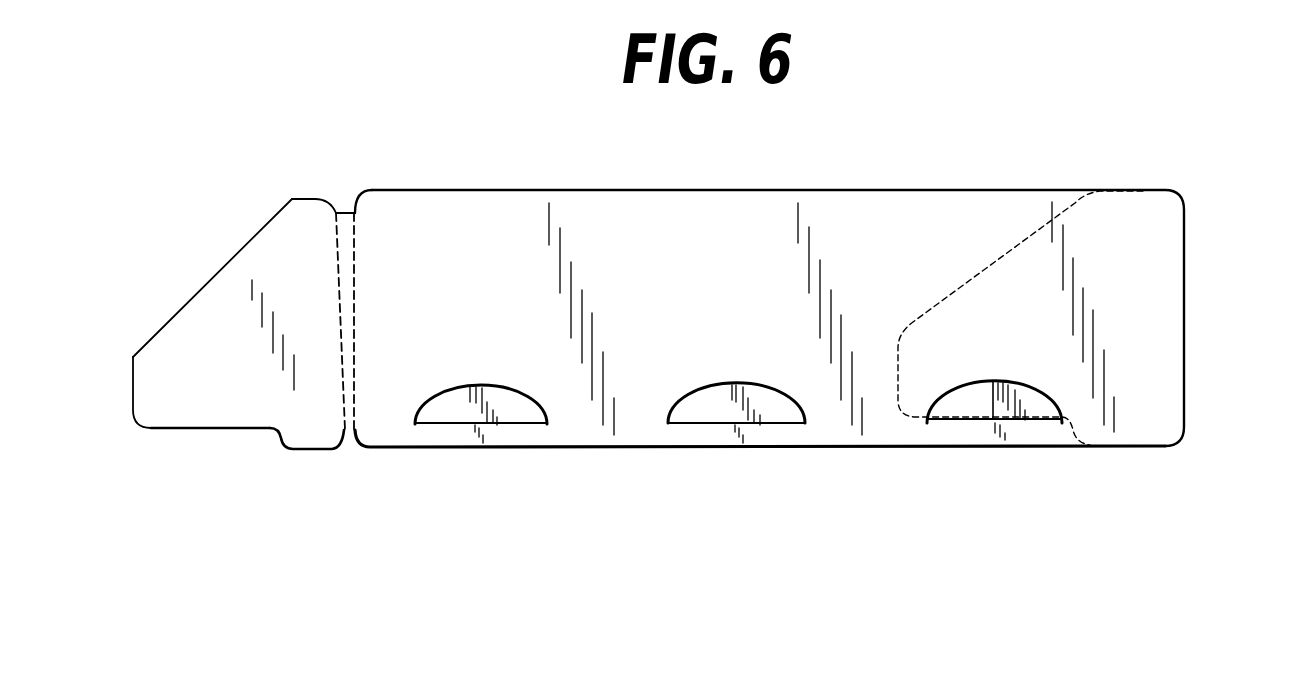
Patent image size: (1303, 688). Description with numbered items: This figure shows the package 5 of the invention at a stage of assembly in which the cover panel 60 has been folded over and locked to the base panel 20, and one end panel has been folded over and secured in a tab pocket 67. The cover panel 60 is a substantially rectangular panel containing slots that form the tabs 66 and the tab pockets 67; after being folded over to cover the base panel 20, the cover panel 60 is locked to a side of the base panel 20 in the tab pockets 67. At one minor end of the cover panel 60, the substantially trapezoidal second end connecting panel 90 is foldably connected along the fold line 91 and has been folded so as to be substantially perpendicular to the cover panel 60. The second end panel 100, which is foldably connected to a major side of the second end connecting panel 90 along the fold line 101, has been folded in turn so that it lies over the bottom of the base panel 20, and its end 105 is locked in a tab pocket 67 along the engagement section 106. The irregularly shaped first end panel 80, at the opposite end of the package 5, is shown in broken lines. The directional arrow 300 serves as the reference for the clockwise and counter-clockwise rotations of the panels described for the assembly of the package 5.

The package 5 is at (930, 140).
The base panel 20 is at (517, 413).
The cover panel 60 is at (832, 422).
The tabs 66 is at (530, 402).
The tab pockets 67 is at (440, 432).
The first end panel 80 is at (1153, 245).
The second end connecting panel 90 is at (347, 213).
The fold line 91 is at (357, 237).
The second end panel 100 is at (220, 298).
The fold line 101 is at (333, 236).
The end 105 is at (150, 411).
The engagement section 106 is at (205, 430).
The directional arrow 300 is at (300, 558).